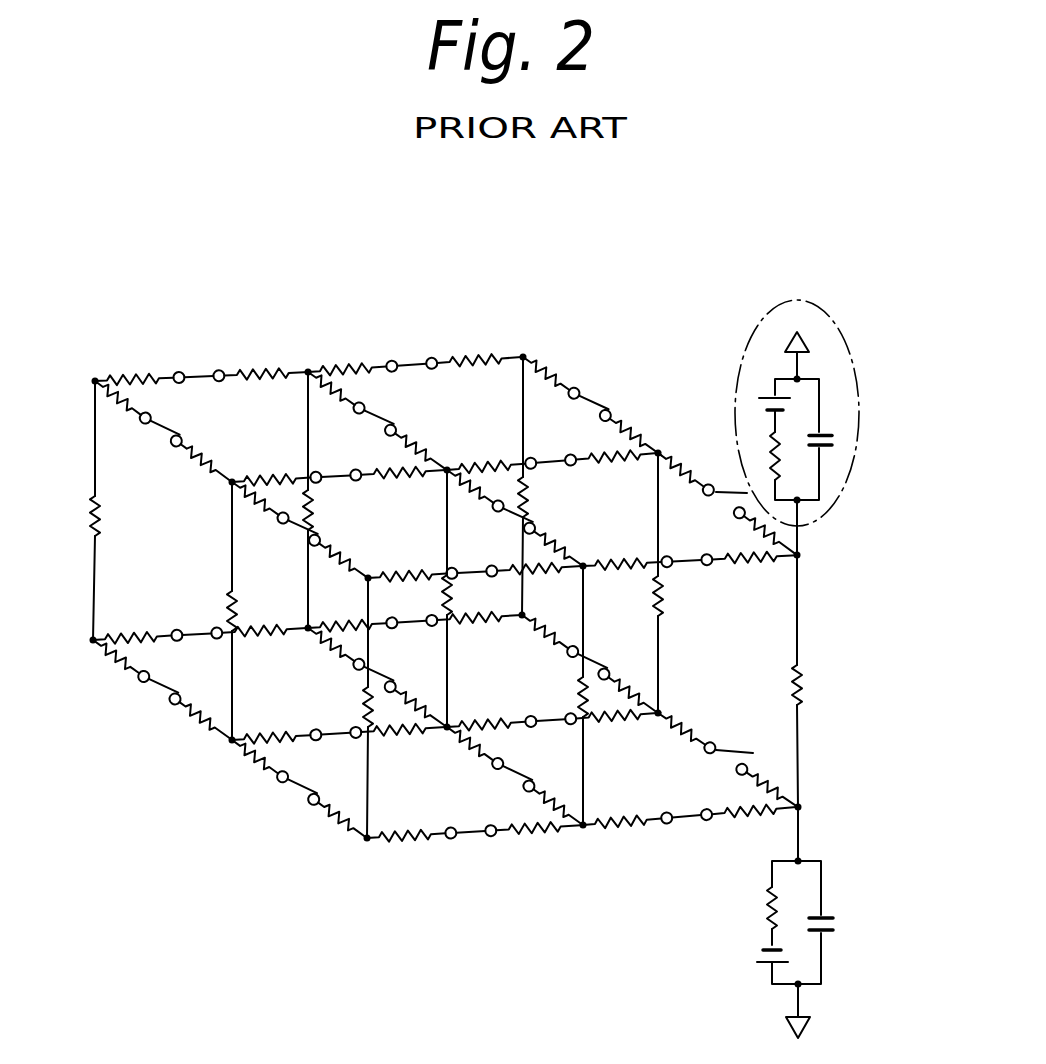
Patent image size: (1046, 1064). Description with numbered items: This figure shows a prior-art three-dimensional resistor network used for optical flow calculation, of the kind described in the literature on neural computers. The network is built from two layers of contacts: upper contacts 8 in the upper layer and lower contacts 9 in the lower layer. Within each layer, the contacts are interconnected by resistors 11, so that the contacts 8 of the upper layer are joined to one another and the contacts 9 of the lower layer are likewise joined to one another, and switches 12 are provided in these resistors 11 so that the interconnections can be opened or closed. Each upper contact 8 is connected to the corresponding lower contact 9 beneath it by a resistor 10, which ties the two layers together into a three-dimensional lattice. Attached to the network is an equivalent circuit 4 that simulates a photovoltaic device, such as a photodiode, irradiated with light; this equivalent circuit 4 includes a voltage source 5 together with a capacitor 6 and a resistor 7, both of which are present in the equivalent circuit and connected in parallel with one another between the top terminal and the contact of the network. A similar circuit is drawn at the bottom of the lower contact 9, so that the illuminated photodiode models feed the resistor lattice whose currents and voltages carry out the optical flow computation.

The equivalent circuit 4 is at (796, 404).
The voltage source 5 is at (753, 403).
The capacitor 6 is at (833, 437).
The resistor 7 is at (760, 453).
The upper contact 8 is at (802, 557).
The lower contact 9 is at (810, 807).
The resistor 10 is at (810, 677).
The resistor 11 is at (562, 381).
The switch 12 is at (598, 396).